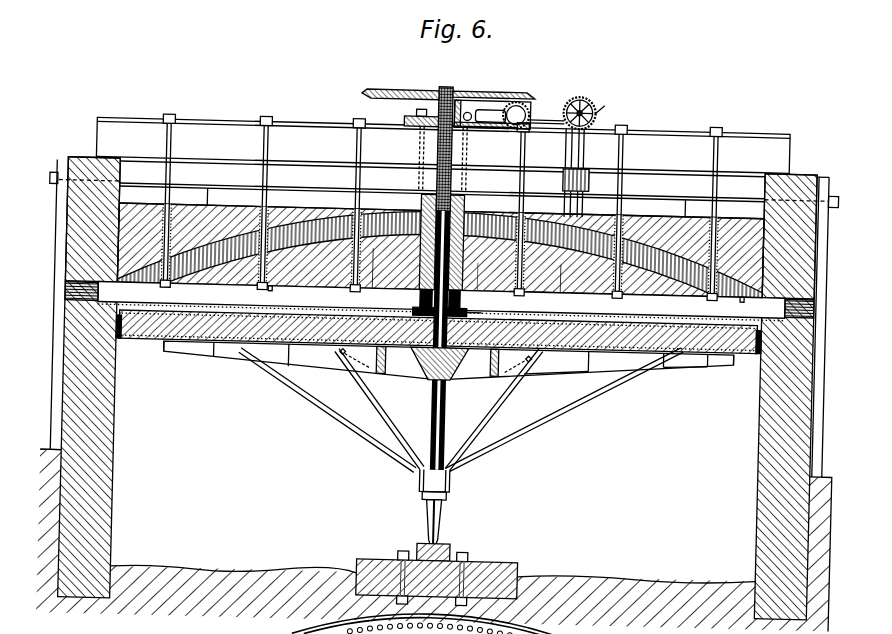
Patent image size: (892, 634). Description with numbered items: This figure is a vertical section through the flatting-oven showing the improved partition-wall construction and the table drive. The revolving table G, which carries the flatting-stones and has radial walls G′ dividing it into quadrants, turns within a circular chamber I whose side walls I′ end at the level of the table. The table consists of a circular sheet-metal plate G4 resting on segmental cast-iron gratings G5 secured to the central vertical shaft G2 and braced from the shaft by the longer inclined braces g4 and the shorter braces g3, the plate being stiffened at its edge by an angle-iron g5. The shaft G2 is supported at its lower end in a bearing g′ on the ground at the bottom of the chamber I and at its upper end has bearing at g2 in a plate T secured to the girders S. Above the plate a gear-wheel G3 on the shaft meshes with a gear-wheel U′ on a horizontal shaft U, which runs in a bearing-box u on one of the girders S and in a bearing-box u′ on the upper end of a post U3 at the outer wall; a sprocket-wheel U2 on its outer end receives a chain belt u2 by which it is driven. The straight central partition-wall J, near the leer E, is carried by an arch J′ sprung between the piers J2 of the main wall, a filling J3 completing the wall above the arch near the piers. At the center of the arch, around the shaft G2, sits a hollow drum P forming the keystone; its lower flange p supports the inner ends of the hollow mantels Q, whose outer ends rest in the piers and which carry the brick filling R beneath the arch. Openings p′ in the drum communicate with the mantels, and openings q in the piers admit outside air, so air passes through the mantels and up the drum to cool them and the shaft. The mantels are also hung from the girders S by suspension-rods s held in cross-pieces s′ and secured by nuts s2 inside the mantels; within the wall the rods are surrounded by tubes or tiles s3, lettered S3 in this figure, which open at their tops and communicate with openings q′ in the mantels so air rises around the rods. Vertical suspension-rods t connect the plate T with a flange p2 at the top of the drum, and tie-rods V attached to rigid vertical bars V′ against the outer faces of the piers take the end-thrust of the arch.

The circular chamber I is at (434, 529).
The side walls I′ is at (117, 438).
The abutments or piers J2 is at (441, 228).
The rigid vertical bars V′ is at (814, 150).
The girders S is at (443, 147).
The tie-rods V is at (442, 184).
The tubes or tiles S3 is at (158, 213).
The filling J3 is at (203, 219).
The arch J′ is at (310, 214).
The central partition-wall J is at (440, 251).
The leer or annealing-oven E is at (463, 262).
The filling or wall R is at (475, 283).
The tubes or tiles s3 is at (466, 263).
The suspension-rods s is at (169, 177).
The cross-pieces s′ is at (172, 124).
The hollow casting or drum P is at (419, 203).
The horizontal flange p2 is at (462, 203).
The hollow girders or mantels Q is at (441, 300).
The openings q is at (82, 310).
The openings q′ is at (509, 301).
The nuts s2 is at (438, 297).
The openings p′ is at (436, 303).
The horizontally-projecting flange p is at (480, 304).
The radial walls G′ is at (438, 332).
The segmental cast-iron gratings G5 is at (448, 364).
The angle-iron g5 is at (165, 352).
The revolving wheel or table G is at (680, 362).
The circular sheet-metal plate G4 is at (546, 372).
The inclined braces g4 is at (345, 424).
The inclined braces g3 is at (385, 406).
The central vertical shaft G2 is at (448, 402).
The bearing g′ is at (456, 546).
The gear-wheel G3 is at (486, 91).
The plate T is at (400, 117).
The bearing g2 is at (418, 107).
The bearing-box u is at (492, 114).
The gear-wheel U′ is at (514, 100).
The shaft U is at (546, 107).
The bearing-box u′ is at (571, 94).
The sprocket-wheel U2 is at (600, 102).
The post U3 is at (562, 177).
The chain belt u2 is at (586, 180).
The vertical suspension-rods t is at (416, 181).